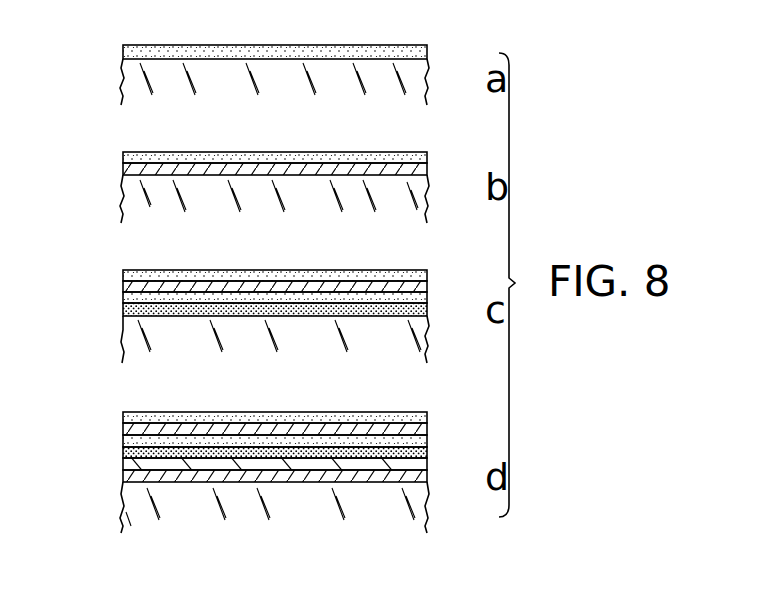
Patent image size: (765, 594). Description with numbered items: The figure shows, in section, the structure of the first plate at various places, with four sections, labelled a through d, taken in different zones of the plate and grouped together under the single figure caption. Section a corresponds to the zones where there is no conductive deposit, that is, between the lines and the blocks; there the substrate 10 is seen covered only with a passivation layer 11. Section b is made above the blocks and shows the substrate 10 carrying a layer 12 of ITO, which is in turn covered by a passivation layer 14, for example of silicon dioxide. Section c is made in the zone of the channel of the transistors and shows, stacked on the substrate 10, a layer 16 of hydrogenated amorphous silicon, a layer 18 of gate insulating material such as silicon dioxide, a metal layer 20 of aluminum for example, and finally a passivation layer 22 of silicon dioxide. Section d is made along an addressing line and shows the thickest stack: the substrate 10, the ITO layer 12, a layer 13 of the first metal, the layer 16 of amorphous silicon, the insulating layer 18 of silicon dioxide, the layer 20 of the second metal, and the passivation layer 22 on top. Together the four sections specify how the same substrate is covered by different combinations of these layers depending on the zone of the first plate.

The substrate 10 is at (139, 67).
The passivation layer 11 is at (250, 48).
The layer of ITO 12 is at (134, 167).
The layer of the first metal 13 is at (148, 464).
The passivation layer 14 is at (251, 158).
The layer of aSi:H 16 is at (135, 310).
The layer of gate insulating material 18 is at (137, 296).
The metal layer 20 is at (259, 288).
The passivation layer 22 is at (398, 277).